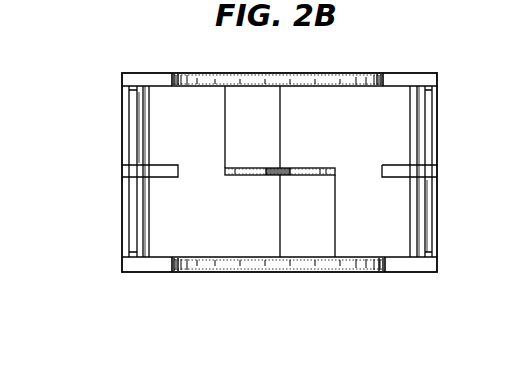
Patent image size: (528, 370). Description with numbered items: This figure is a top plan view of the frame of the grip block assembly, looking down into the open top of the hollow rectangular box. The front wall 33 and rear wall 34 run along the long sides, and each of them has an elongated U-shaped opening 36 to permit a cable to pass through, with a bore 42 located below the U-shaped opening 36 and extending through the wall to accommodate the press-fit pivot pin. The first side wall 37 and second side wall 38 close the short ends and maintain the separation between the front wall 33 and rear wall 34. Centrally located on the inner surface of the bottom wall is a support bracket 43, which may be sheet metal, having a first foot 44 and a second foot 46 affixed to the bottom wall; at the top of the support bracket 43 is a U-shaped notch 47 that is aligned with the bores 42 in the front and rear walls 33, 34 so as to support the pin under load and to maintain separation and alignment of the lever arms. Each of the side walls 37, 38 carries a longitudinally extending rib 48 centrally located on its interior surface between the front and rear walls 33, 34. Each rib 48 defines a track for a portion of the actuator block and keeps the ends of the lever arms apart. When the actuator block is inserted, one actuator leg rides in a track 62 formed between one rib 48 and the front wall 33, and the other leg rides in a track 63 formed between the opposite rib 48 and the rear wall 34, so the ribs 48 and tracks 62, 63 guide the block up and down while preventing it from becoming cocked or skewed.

The front wall 33 is at (138, 266).
The rear wall 34 is at (152, 80).
The U-shaped opening 36 is at (378, 78).
The first side wall 37 is at (125, 226).
The second side wall 38 is at (432, 222).
The bore 42 is at (288, 82).
The support bracket 43 is at (320, 168).
The first foot 44 is at (333, 212).
The second foot 46 is at (265, 132).
The U-shaped notch 47 is at (272, 178).
The rib 48 is at (157, 166).
The track 62 is at (400, 241).
The track 63 is at (155, 107).